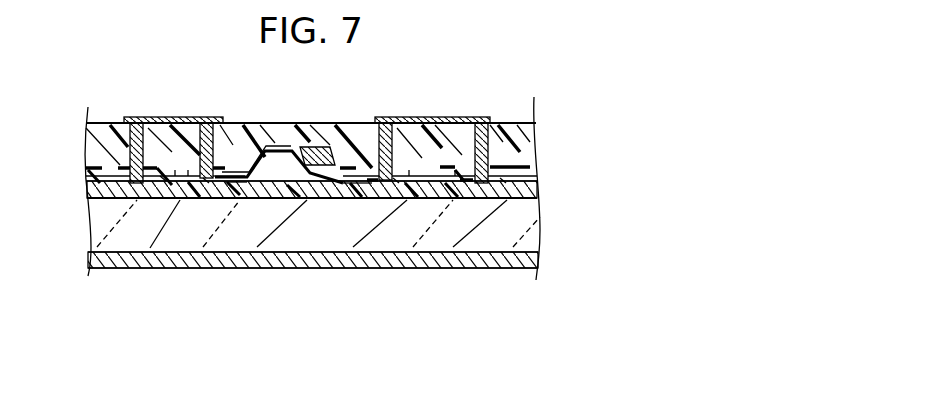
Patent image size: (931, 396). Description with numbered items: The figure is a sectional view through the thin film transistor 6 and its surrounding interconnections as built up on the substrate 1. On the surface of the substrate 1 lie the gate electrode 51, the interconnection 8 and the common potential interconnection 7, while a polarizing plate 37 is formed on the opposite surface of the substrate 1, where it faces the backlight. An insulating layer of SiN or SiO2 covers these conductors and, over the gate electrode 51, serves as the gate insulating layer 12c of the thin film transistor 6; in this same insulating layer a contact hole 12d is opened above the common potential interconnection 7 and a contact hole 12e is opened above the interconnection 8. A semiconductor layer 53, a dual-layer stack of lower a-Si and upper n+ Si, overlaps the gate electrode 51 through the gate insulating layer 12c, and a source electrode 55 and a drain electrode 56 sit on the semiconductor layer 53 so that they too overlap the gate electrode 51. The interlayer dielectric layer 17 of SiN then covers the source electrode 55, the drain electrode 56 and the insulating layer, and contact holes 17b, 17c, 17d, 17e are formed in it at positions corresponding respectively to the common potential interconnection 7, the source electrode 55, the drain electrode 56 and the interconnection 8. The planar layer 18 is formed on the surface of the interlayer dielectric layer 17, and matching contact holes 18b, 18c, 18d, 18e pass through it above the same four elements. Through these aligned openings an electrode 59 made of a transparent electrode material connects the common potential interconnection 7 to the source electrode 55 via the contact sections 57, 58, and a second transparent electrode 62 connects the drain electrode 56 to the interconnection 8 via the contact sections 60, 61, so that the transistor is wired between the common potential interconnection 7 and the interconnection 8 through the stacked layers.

The substrate 1 is at (523, 222).
The thin film transistor 6 is at (296, 245).
The common potential interconnection 7 is at (86, 189).
The interconnection 8 is at (527, 190).
The gate insulating layer 12c is at (278, 188).
The contact hole 12d is at (150, 190).
The contact hole 12e is at (482, 190).
The interlayer dielectric layer 17 is at (528, 170).
The contact hole 17b is at (162, 190).
The contact hole 17c is at (203, 190).
The contact hole 17d is at (393, 185).
The contact hole 17e is at (503, 190).
The planar layer 18 is at (517, 142).
The contact hole 18b is at (175, 175).
The contact hole 18c is at (188, 185).
The contact hole 18d is at (409, 183).
The contact hole 18e is at (455, 185).
The polarizing plate 37 is at (530, 260).
The gate electrode 51 is at (304, 185).
The semiconductor layer 53 is at (262, 165).
The source electrode 55 is at (227, 192).
The drain electrode 56 is at (372, 190).
The contact section 57 is at (113, 123).
The contact section 58 is at (232, 125).
The electrode 59 is at (178, 117).
The contact section 60 is at (365, 127).
The contact section 61 is at (495, 127).
The electrode 62 is at (428, 117).